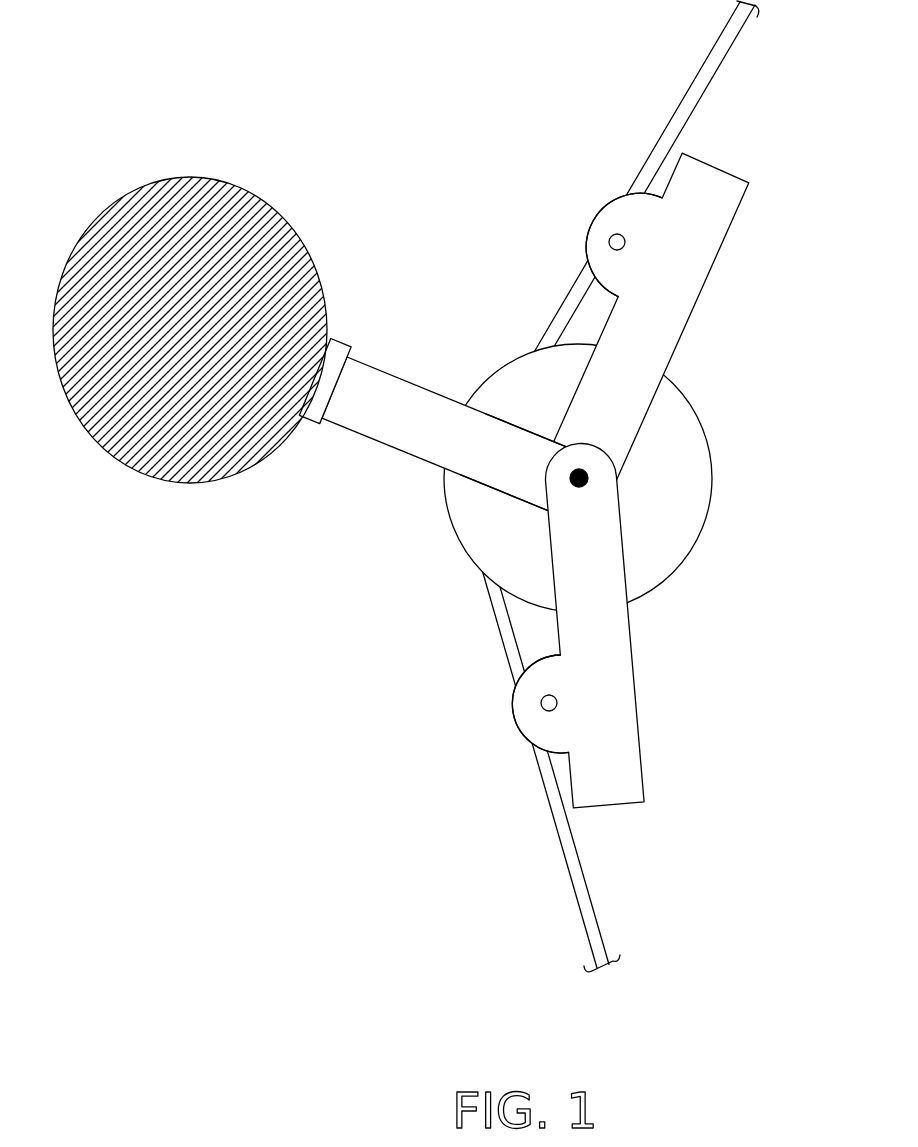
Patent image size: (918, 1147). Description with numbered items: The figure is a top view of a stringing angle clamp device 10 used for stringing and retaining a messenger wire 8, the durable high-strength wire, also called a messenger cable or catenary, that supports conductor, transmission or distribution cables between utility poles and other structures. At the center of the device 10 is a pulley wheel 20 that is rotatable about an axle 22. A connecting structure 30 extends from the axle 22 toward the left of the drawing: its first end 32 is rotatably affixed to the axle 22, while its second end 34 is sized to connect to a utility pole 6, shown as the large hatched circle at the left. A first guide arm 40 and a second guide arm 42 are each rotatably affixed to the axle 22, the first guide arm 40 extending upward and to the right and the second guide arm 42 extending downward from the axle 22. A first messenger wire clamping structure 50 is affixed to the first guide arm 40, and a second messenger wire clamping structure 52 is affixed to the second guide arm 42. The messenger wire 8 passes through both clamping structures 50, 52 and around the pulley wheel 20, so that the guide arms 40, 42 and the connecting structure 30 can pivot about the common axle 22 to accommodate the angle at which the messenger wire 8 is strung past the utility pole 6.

The utility pole 6 is at (228, 228).
The messenger wire 8 is at (715, 60).
The stringing angle clamp device 10 is at (405, 23).
The pulley wheel 20 is at (683, 430).
The axle 22 is at (588, 479).
The connecting structure 30 is at (443, 417).
The first end 32 is at (522, 466).
The second end 34 is at (345, 370).
The first guide arm 40 is at (705, 238).
The second guide arm 42 is at (617, 695).
The first messenger wire clamping structure 50 is at (608, 220).
The second messenger wire clamping structure 52 is at (525, 707).